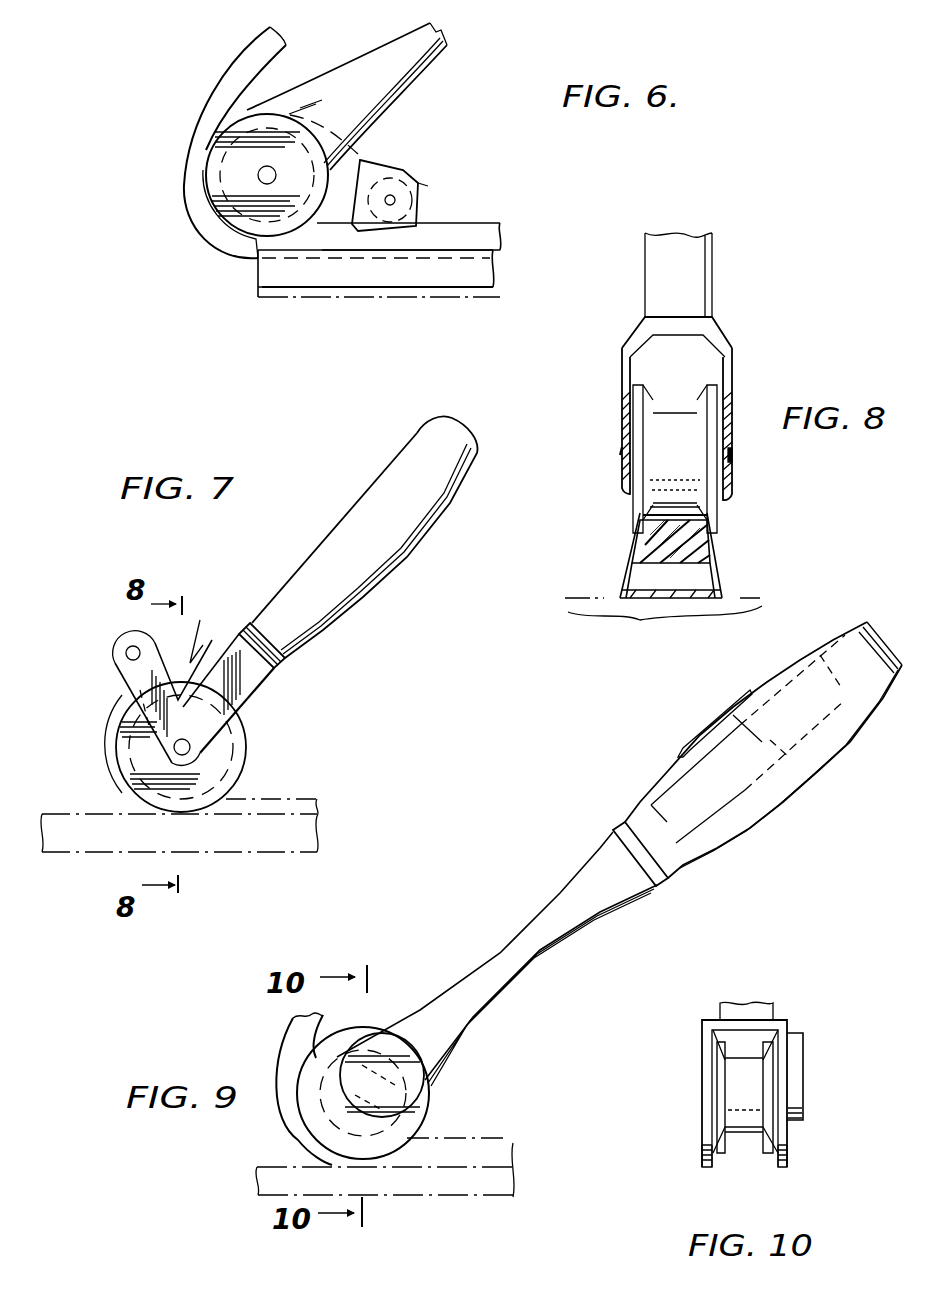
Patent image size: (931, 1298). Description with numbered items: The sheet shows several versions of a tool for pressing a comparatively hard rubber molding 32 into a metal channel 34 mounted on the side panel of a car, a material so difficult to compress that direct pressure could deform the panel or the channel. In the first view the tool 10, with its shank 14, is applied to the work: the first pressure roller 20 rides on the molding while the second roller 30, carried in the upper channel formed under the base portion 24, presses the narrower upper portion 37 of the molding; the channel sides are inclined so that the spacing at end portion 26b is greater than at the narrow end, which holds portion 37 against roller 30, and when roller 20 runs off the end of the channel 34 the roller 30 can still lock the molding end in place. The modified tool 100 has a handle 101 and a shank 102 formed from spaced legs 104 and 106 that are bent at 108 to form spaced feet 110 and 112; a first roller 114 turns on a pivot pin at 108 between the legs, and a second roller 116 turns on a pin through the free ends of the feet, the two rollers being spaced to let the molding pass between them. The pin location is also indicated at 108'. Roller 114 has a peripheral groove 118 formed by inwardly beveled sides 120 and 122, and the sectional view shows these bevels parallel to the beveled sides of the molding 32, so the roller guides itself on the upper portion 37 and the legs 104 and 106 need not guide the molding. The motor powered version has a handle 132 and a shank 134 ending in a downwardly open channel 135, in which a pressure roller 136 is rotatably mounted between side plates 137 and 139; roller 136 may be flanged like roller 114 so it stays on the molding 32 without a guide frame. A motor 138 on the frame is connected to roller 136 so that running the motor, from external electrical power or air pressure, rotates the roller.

In FIG. 6, the tool 10 is at (334, 62).
In FIG. 6, the shank 14 is at (446, 37).
In FIG. 6, the first pressure roller 20 is at (192, 164).
In FIG. 6, the base portion 24 is at (422, 187).
In FIG. 6, the end portion 26b is at (387, 161).
In FIG. 6, the second roller 30 is at (412, 168).
In FIG. 7, the rubber molding 32 is at (117, 792).
In FIG. 8, the rubber molding 32 is at (636, 543).
In FIG. 9, the rubber molding 32 is at (517, 1153).
In FIG. 6, the metal channel 34 is at (492, 272).
In FIG. 7, the metal channel 34 is at (320, 848).
In FIG. 8, the metal channel 34 is at (626, 578).
In FIG. 6, the narrower opposite portion of the molding 37 is at (450, 227).
In FIG. 9, the narrower opposite portion of the molding 37 is at (467, 1140).
In FIG. 7, the modified tool 100 is at (350, 465).
In FIG. 7, the handle 101 is at (393, 542).
In FIG. 8, the handle 101 is at (713, 265).
In FIG. 7, the shank 102 is at (263, 667).
In FIG. 7, the leg 104 is at (251, 692).
In FIG. 8, the leg 104 is at (732, 468).
In FIG. 8, the leg 106 is at (623, 467).
In FIG. 7, the bend 108 is at (244, 753).
In FIG. 8, the bend 108 is at (591, 441).
In FIG. 7, the axle slot 108' is at (217, 620).
In FIG. 7, the foot 110 is at (130, 683).
In FIG. 7, the foot 112 is at (124, 710).
In FIG. 7, the first roller 114 is at (240, 778).
In FIG. 8, the first roller 114 is at (713, 520).
In FIG. 7, the second roller 116 is at (113, 650).
In FIG. 8, the second roller 116 is at (693, 285).
In FIG. 8, the peripheral groove 118 is at (683, 392).
In FIG. 8, the beveled roller side 120 is at (640, 400).
In FIG. 8, the beveled roller side 122 is at (707, 403).
In FIG. 9, the handle 132 is at (793, 782).
In FIG. 9, the shank 134 is at (615, 900).
In FIG. 10, the downwardly open channel 135 is at (792, 1030).
In FIG. 9, the pressure roller 136 is at (427, 1103).
In FIG. 10, the pressure roller 136 is at (747, 1130).
In FIG. 10, the side plate 137 is at (789, 1153).
In FIG. 9, the motor 138 is at (388, 1038).
In FIG. 10, the motor 138 is at (804, 1080).
In FIG. 10, the side plate 139 is at (701, 1160).